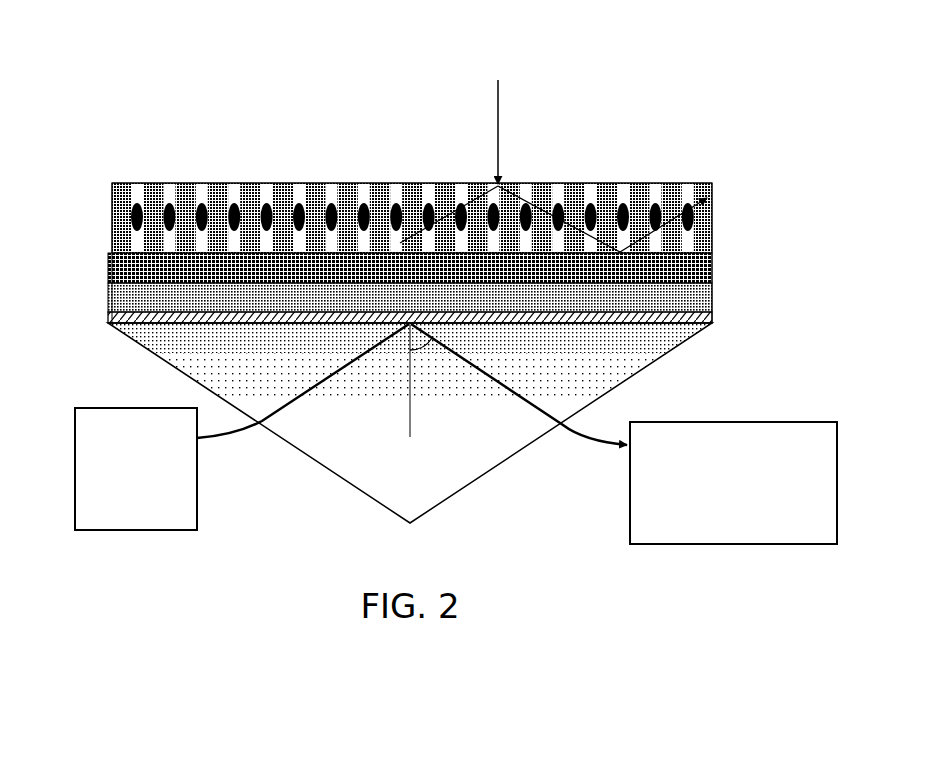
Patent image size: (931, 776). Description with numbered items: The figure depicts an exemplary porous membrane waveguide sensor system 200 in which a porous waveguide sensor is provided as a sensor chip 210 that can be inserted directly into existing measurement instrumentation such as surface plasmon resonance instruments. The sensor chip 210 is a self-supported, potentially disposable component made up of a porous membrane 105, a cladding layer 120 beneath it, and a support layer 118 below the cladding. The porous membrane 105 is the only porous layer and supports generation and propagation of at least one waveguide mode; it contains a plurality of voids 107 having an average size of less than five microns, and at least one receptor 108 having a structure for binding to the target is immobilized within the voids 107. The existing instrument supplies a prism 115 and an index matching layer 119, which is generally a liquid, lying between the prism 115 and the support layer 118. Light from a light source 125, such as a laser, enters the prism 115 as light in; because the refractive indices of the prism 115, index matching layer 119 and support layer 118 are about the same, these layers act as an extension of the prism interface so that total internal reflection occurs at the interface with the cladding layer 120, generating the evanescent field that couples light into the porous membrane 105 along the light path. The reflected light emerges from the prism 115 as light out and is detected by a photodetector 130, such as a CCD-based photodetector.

The porous membrane waveguide sensor system 200 is at (431, 353).
The sensor chip 210 is at (92, 173).
The porous membrane 105 is at (447, 171).
The voids 107 is at (590, 176).
The receptor 108 is at (663, 240).
The cladding layer 120 is at (716, 270).
The support layer 118 is at (105, 297).
The index matching layer 119 is at (716, 320).
The prism 115 is at (345, 483).
The light source 125 is at (136, 469).
The photodetector 130 is at (733, 483).